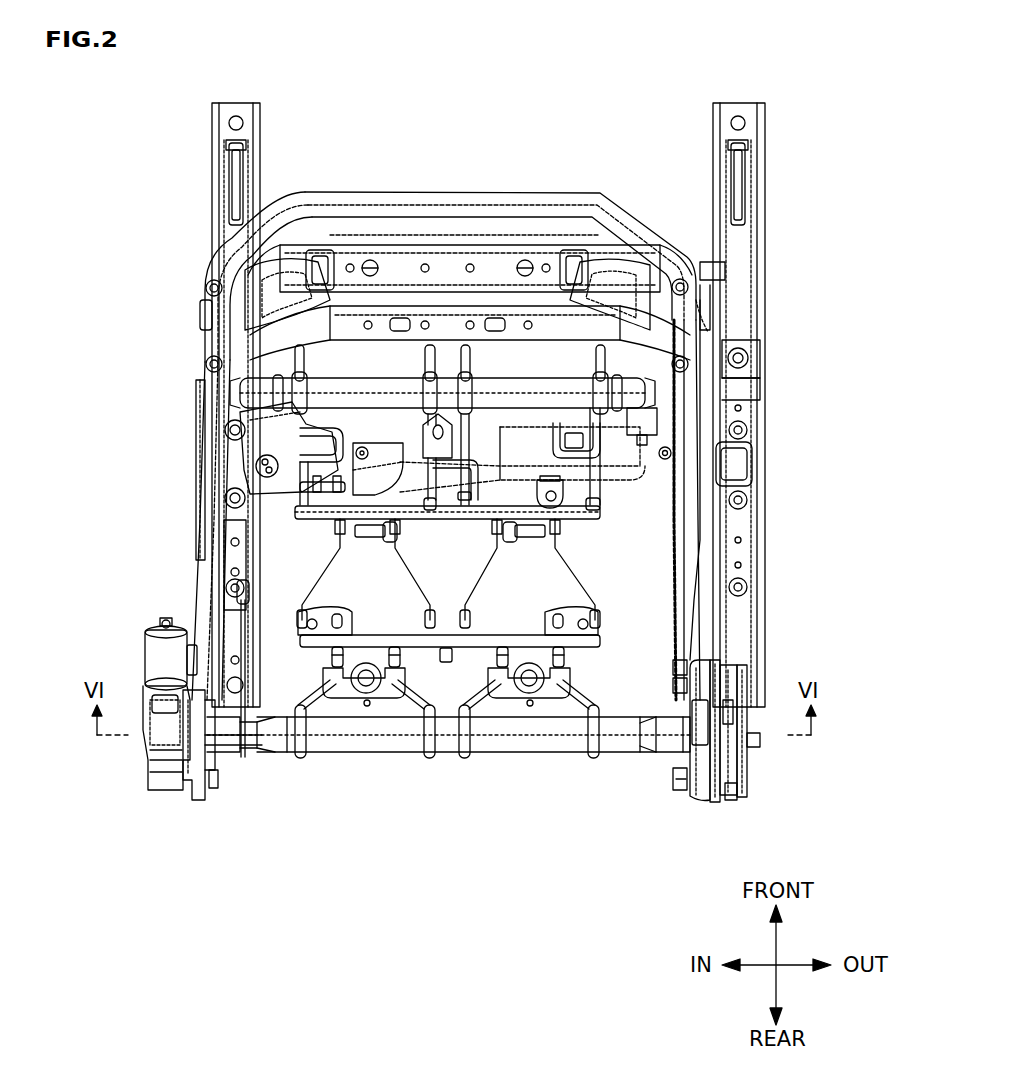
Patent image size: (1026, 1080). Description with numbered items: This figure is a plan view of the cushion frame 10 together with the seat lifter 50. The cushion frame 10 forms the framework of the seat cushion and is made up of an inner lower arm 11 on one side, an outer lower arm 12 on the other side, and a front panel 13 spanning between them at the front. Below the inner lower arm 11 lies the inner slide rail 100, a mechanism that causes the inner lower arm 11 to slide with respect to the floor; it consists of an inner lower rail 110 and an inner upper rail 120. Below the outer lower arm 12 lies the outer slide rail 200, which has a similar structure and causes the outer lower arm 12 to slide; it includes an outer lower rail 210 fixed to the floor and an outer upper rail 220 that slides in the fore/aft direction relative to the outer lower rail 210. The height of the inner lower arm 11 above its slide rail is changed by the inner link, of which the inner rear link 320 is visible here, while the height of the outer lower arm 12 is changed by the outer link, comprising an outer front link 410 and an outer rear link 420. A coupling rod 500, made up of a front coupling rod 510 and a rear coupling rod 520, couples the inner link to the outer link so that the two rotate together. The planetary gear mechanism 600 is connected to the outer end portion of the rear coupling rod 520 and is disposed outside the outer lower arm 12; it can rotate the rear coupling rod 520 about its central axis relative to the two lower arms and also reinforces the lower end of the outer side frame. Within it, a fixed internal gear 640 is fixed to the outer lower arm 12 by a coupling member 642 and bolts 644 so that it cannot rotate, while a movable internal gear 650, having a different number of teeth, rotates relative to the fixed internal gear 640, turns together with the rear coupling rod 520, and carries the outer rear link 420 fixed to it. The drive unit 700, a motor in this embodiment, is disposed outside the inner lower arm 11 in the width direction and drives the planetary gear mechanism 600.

The cushion frame 10 is at (602, 192).
The inner lower arm 11 is at (212, 482).
The outer lower arm 12 is at (690, 547).
The front panel 13 is at (452, 265).
The seat lifter 50 is at (778, 615).
The inner slide rail 100 is at (174, 495).
The inner lower rail 110 is at (255, 530).
The inner upper rail 120 is at (235, 556).
The outer slide rail 200 is at (786, 331).
The outer lower rail 210 is at (765, 357).
The outer upper rail 220 is at (740, 385).
The inner rear link 320 is at (242, 757).
The outer front link 410 is at (740, 320).
The outer rear link 420 is at (722, 722).
The coupling rod 500 is at (552, 792).
The front coupling rod 510 is at (484, 400).
The rear coupling rod 520 is at (527, 752).
The planetary gear mechanism 600 is at (766, 745).
The fixed internal gear 640 is at (747, 778).
The coupling member 642 is at (725, 695).
The bolts 644 is at (748, 672).
The movable internal gear 650 is at (720, 757).
The drive unit 700 is at (150, 625).